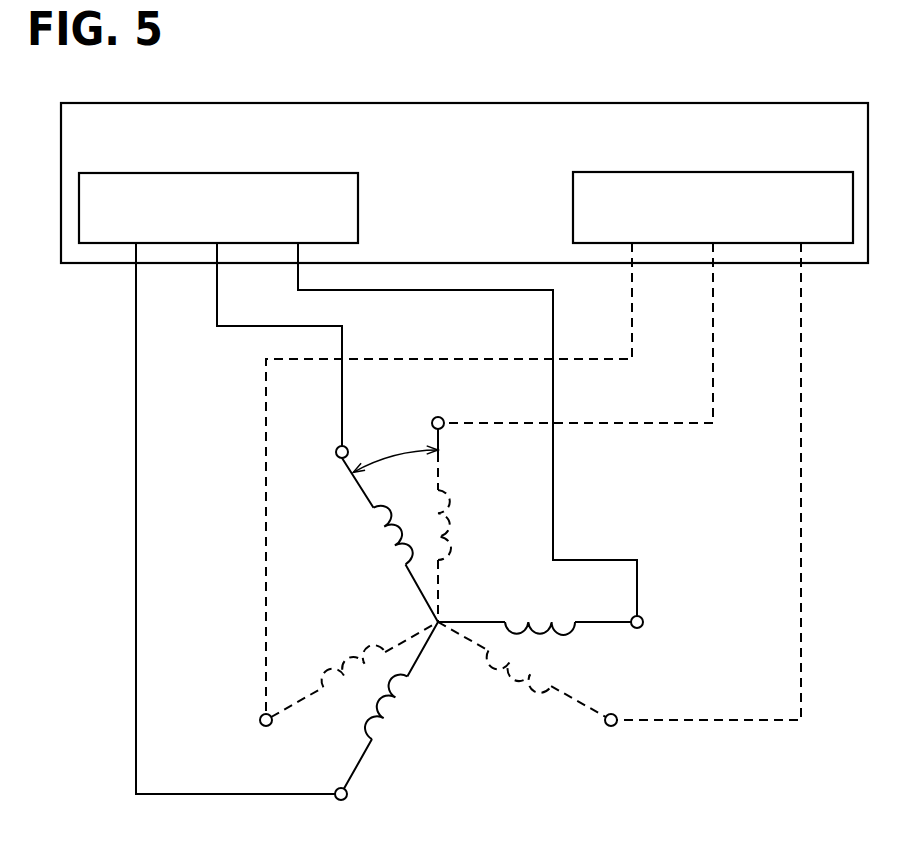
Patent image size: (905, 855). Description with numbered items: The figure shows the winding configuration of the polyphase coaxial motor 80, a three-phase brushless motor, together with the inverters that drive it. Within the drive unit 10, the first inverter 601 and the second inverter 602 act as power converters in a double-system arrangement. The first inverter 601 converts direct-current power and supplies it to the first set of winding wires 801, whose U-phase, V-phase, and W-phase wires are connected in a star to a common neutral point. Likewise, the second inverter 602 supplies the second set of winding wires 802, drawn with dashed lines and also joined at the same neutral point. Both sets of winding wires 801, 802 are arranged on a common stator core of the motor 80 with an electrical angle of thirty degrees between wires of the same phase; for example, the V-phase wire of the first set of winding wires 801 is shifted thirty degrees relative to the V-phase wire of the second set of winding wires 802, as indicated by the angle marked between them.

The motor drive system 10 is at (460, 103).
The first inverter 601 is at (217, 172).
The second inverter 602 is at (714, 172).
The motor 80 is at (441, 609).
The first set of winding wires 801 is at (398, 527).
The second set of winding wires 802 is at (457, 523).